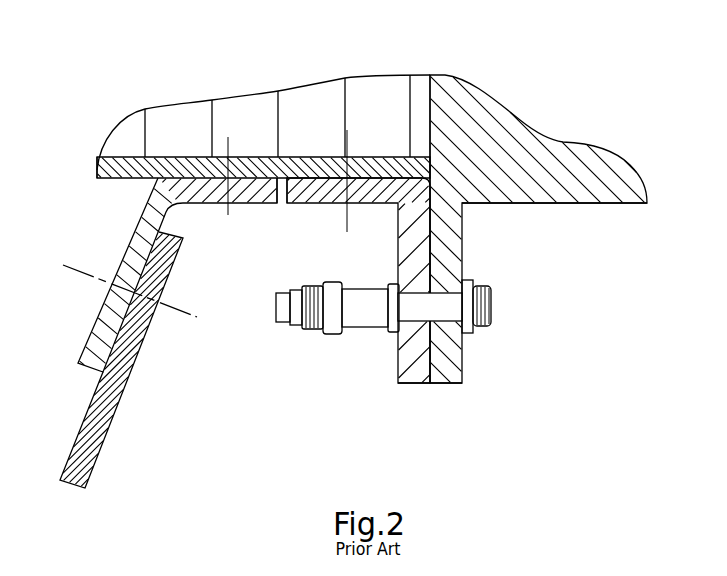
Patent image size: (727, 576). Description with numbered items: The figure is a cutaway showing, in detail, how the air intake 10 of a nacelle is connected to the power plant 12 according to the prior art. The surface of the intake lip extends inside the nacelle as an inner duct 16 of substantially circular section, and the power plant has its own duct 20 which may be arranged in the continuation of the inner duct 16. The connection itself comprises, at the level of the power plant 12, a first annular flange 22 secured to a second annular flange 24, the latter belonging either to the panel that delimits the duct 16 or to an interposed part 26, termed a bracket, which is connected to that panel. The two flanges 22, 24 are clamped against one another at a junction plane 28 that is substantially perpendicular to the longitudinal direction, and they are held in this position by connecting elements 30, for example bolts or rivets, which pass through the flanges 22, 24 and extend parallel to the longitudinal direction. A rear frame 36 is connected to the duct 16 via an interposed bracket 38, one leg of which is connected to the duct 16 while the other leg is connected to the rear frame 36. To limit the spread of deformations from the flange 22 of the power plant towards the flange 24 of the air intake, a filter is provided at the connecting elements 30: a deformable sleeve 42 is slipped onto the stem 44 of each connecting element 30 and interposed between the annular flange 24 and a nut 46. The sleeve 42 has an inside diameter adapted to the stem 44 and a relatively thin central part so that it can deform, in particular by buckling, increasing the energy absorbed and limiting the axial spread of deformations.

The air intake 10 is at (186, 100).
The power plant 12 is at (609, 212).
The inner duct 16 is at (305, 87).
The duct 20 is at (547, 142).
The first annular flange 22 is at (452, 230).
The second annular flange 24 is at (413, 383).
The interposed part (bracket) 26 is at (319, 214).
The junction plane 28 is at (442, 108).
The connecting elements 30 is at (486, 329).
The rear frame 36 is at (85, 470).
The interposed part (bracket) 38 is at (133, 249).
The deformable sleeve 42 is at (375, 317).
The stem 44 is at (282, 312).
The nut 46 is at (316, 327).